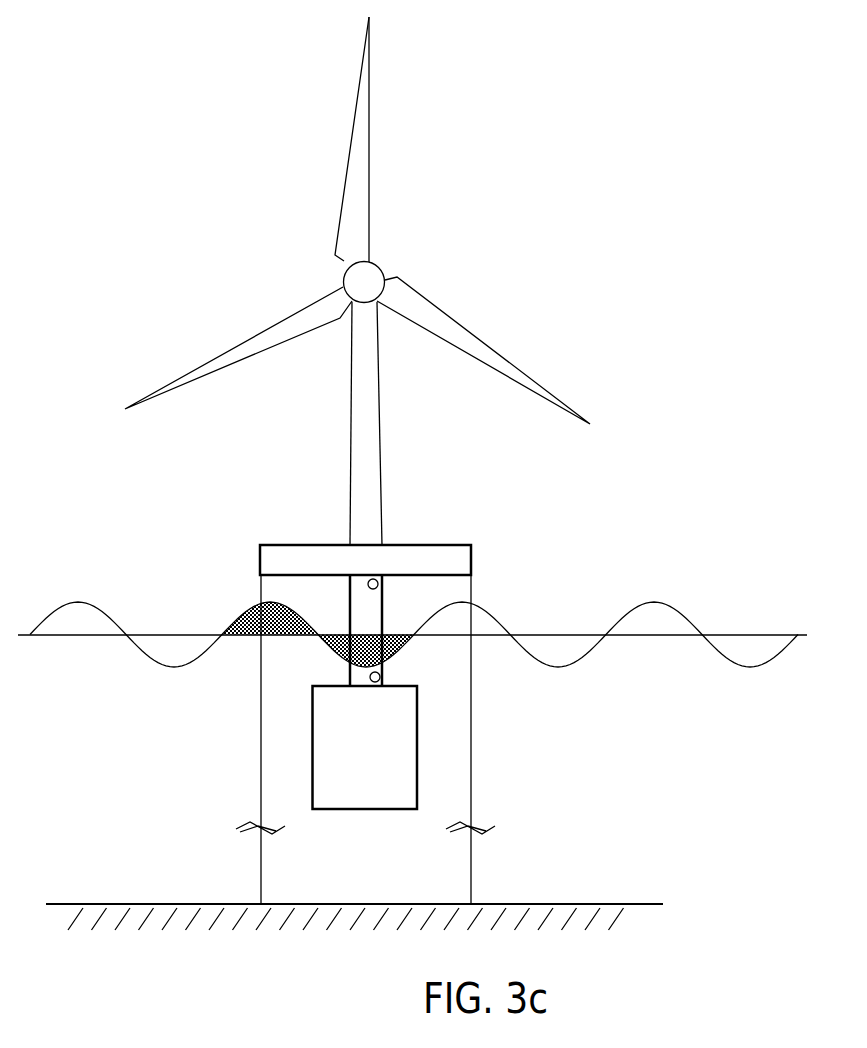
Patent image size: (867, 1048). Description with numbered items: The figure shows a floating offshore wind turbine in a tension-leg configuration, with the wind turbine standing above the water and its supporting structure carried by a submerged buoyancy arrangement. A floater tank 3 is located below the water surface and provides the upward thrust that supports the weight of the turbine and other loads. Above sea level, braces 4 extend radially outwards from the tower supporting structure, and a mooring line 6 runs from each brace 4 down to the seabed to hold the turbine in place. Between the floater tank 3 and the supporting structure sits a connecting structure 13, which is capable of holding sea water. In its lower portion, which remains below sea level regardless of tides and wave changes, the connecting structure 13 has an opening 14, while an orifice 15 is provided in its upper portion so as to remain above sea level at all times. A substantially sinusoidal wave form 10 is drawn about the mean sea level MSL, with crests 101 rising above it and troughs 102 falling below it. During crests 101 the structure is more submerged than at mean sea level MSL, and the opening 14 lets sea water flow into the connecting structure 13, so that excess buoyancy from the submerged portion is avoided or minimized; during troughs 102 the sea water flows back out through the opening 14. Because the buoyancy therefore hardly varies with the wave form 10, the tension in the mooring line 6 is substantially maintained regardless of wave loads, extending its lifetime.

The floater tank 3 is at (322, 782).
The brace 4 is at (443, 558).
The mooring line 6 is at (472, 770).
The wave form 10 is at (72, 600).
The connecting structure 13 is at (356, 603).
The opening 14 is at (381, 678).
The orifice 15 is at (379, 585).
The crest 101 is at (245, 630).
The trough 102 is at (341, 645).
The mean sea level MSL is at (758, 633).